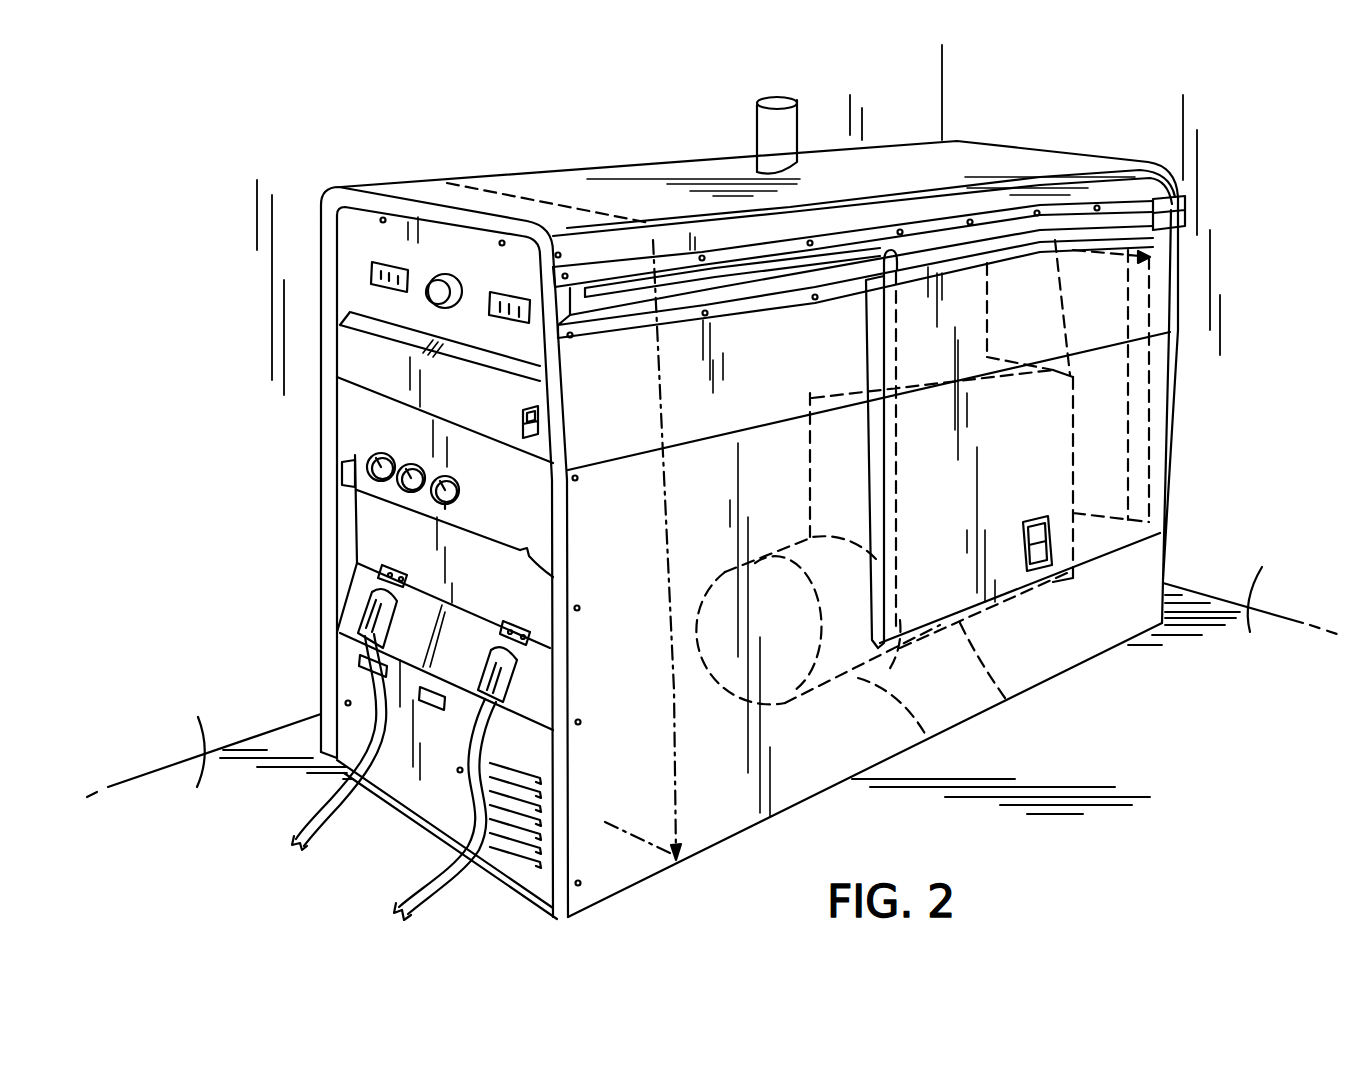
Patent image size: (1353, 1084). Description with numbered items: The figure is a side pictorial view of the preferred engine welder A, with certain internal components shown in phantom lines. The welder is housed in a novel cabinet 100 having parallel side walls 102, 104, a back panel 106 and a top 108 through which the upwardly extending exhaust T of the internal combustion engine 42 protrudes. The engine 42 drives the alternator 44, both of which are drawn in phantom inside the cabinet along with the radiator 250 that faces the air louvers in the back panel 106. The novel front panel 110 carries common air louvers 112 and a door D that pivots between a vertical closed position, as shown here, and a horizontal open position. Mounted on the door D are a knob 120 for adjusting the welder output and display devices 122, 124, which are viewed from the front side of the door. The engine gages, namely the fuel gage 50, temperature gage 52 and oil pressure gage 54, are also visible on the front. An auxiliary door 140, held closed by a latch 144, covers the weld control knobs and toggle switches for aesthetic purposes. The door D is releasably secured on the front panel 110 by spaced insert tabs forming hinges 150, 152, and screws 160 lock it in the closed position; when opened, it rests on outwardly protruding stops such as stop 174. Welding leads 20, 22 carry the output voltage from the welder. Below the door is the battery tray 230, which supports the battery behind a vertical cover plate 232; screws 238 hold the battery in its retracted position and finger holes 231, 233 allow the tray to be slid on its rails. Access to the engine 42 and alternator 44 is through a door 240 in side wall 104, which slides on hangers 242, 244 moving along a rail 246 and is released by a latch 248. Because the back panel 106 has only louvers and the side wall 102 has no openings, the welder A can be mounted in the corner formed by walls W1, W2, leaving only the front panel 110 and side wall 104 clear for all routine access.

The cabinet 100 is at (1062, 149).
The side wall 102 is at (321, 325).
The side wall 104 is at (733, 803).
The back panel 106 is at (1180, 377).
The top 108 is at (650, 195).
The front panel 110 is at (527, 527).
The air louvers 112 is at (507, 847).
The knob 120 is at (438, 283).
The display device 122 is at (372, 275).
The display device 124 is at (510, 290).
The auxiliary door 140 is at (517, 397).
The latch 144 is at (540, 420).
The hinge 150 is at (355, 488).
The hinge 152 is at (540, 570).
The screws 160 is at (383, 218).
The stop 174 is at (343, 470).
The fuel gage 50 is at (372, 455).
The temperature gage 52 is at (407, 490).
The oil pressure gage 54 is at (437, 502).
The lead 20 is at (327, 850).
The lead 22 is at (428, 892).
The battery tray 230 is at (340, 768).
The finger hole 231 is at (425, 706).
The vertical cover plate 232 is at (355, 731).
The finger hole 233 is at (378, 672).
The screws 238 is at (345, 703).
The door 240 is at (1160, 500).
The hanger 242 is at (893, 258).
The hanger 244 is at (1166, 208).
The rail 246 is at (783, 277).
The latch 248 is at (1038, 545).
The radiator 250 is at (1160, 439).
The internal combustion engine 42 is at (1005, 700).
The alternator 44 is at (927, 735).
The engine welder A is at (1028, 133).
The door D is at (527, 481).
The exhaust T is at (757, 125).
The wall W1 is at (219, 766).
The wall W2 is at (1096, 690).